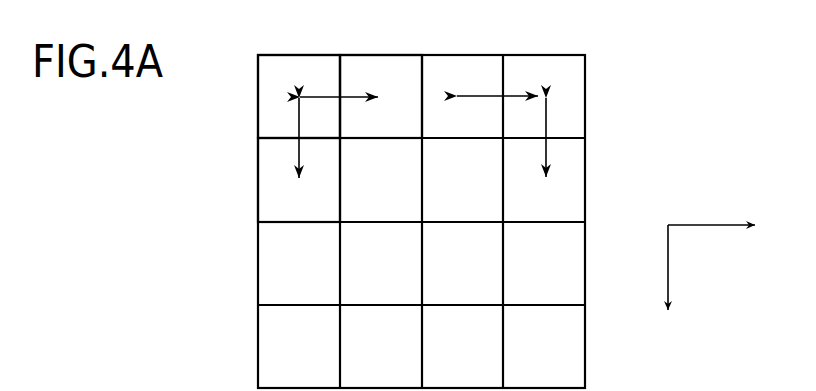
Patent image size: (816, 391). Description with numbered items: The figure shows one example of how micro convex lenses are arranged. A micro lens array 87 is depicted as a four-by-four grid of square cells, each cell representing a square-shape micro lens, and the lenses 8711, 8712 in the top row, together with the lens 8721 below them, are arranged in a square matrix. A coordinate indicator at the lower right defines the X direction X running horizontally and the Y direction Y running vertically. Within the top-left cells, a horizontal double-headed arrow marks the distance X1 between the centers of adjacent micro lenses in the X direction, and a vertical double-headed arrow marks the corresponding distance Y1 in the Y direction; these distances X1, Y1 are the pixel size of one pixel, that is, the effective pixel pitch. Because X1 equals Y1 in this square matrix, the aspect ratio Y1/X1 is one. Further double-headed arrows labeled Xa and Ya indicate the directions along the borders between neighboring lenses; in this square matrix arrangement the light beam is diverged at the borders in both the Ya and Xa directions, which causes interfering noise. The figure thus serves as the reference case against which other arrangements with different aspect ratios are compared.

The micro lens array 87 is at (613, 92).
The micro lens 8711 is at (300, 75).
The micro lens 8712 is at (383, 75).
The region (row 2, column 1) 8721 is at (281, 196).
The distance between centers of adjacent micro lenses in X direction X1 is at (350, 104).
The distance between centers of adjacent micro lenses in Y direction Y1 is at (297, 134).
The Xa direction Xa is at (492, 90).
The Ya direction Ya is at (552, 147).
The X direction X is at (721, 227).
The Y direction Y is at (669, 283).